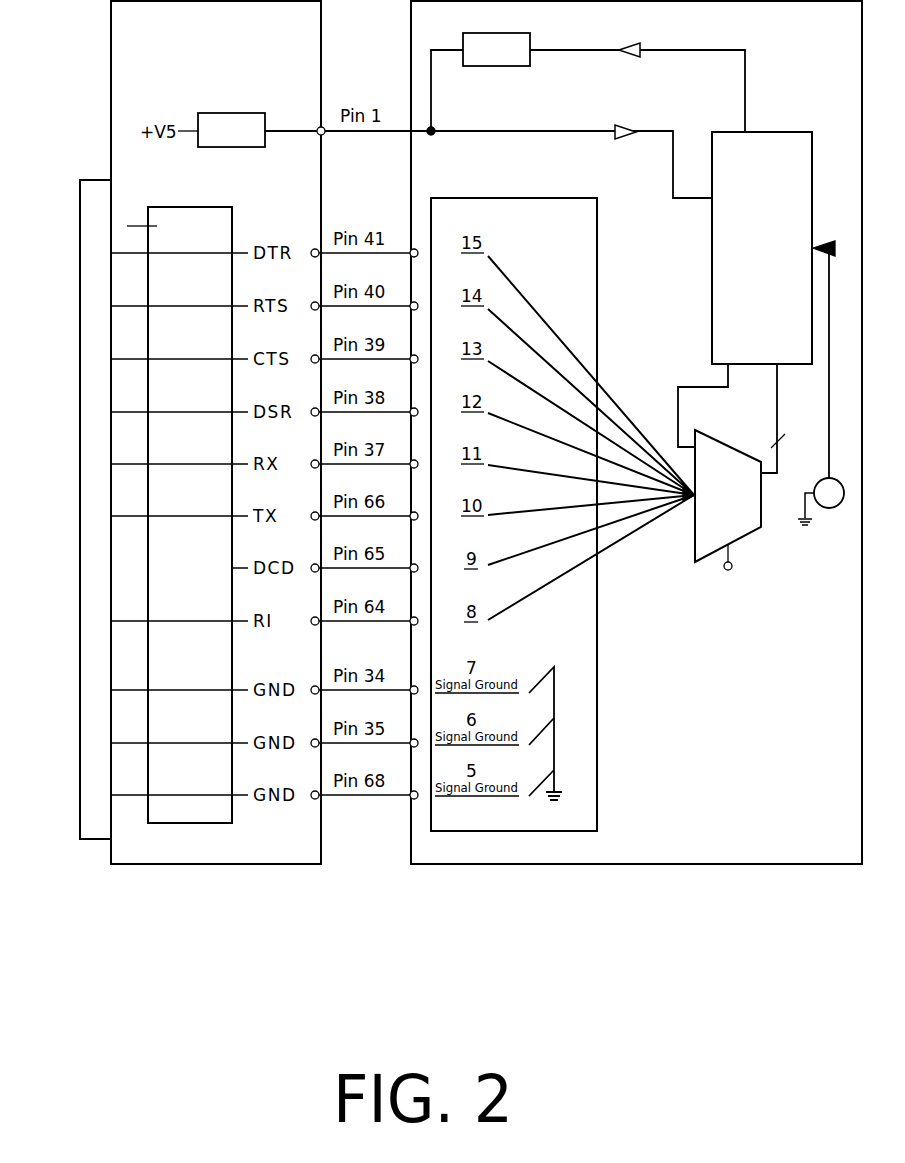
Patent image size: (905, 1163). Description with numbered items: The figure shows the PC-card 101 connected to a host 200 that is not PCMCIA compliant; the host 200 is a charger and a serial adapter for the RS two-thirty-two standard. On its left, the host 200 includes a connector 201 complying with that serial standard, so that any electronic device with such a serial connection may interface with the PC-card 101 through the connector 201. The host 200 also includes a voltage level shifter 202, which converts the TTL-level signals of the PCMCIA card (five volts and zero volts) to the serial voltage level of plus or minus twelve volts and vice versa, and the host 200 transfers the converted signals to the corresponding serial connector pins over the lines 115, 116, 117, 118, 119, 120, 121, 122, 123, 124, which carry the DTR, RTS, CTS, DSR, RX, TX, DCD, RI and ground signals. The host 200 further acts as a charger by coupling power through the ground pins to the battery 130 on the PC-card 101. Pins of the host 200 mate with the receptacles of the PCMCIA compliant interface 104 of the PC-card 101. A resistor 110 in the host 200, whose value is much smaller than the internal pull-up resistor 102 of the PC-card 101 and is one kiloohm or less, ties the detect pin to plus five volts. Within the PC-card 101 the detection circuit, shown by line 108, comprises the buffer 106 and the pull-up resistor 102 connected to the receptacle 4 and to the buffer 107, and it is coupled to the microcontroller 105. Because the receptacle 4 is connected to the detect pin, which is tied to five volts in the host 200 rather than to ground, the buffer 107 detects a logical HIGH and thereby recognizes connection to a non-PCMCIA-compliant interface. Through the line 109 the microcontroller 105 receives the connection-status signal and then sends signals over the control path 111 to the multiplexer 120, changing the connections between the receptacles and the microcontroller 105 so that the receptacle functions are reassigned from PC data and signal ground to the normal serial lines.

The receptacle 4 is at (433, 128).
The PC-card 101 is at (636, 432).
The pull-up resistor 102 is at (496, 37).
The interface 104 is at (514, 514).
The microcontroller 105 is at (762, 248).
The buffer 106 is at (628, 43).
The buffer 107 is at (626, 125).
The line 108 is at (745, 90).
The line 109 is at (673, 181).
The resistor 110 is at (231, 118).
The control line 111 is at (777, 383).
The line 115 is at (125, 251).
The line 116 is at (125, 304).
The line 117 is at (125, 357).
The line 118 is at (125, 410).
The line 119 is at (125, 462).
The multiplexer 120 is at (125, 514).
The line 121 is at (125, 619).
The line 122 is at (125, 688).
The line 123 is at (125, 741).
The line 124 is at (125, 793).
The battery 130 is at (829, 508).
The host 200 is at (216, 432).
The connector 201 is at (93, 840).
The voltage level shifter 202 is at (190, 515).